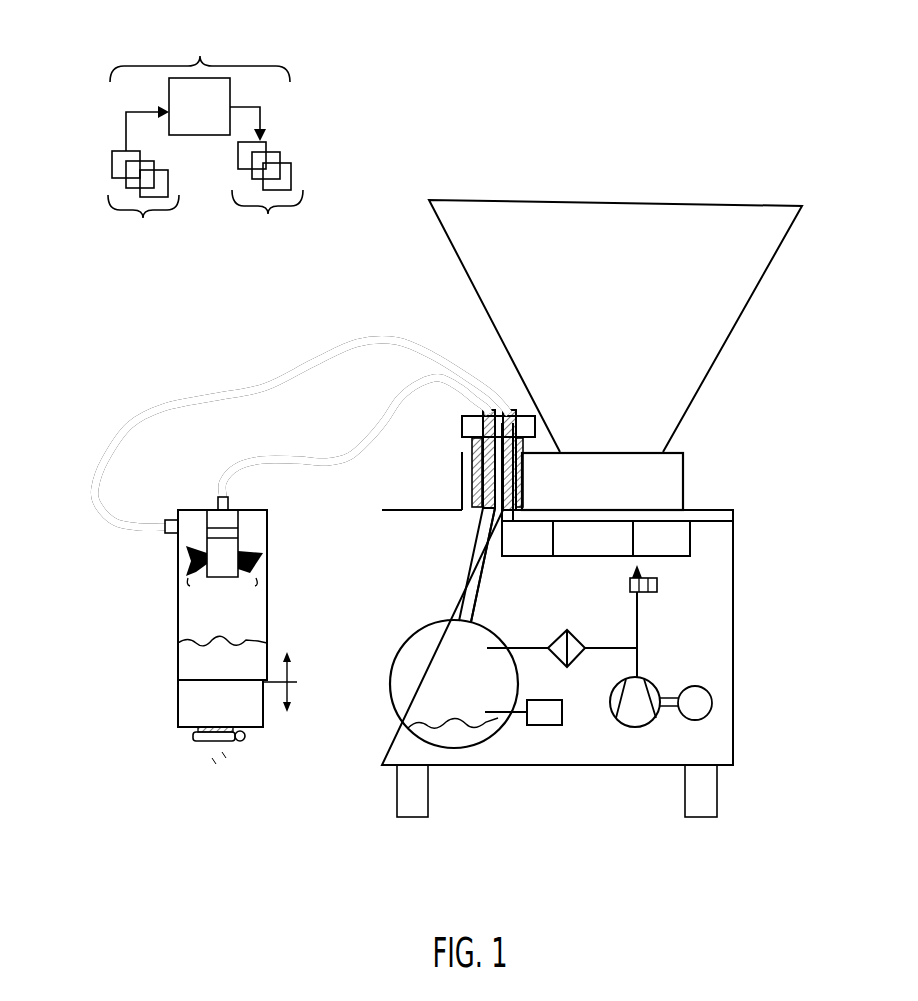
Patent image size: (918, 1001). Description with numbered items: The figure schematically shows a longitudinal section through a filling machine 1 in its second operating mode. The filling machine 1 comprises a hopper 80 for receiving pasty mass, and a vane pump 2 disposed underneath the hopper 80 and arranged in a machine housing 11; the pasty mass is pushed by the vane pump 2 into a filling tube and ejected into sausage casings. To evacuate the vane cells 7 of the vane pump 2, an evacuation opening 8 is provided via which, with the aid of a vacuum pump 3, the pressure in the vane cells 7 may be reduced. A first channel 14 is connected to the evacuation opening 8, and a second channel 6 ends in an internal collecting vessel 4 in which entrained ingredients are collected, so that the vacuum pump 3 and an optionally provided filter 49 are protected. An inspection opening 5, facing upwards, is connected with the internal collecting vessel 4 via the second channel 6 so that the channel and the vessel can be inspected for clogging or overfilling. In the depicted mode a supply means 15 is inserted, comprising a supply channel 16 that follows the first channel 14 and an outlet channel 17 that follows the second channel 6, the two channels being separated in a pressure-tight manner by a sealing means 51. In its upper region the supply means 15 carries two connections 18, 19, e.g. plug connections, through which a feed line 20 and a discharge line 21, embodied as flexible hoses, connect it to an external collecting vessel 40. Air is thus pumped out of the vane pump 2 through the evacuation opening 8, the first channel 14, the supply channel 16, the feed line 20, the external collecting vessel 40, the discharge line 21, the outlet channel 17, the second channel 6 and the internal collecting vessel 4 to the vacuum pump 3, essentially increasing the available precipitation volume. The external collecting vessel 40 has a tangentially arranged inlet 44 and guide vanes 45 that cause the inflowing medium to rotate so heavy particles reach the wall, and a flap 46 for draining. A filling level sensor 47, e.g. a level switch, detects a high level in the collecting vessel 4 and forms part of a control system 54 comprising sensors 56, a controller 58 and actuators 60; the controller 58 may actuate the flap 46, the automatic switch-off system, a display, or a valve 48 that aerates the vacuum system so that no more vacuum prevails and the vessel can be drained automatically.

The filling machine 1 is at (611, 168).
The vane pump 2 is at (684, 526).
The vacuum pump 3 is at (636, 728).
The collecting vessel 4 is at (391, 702).
The inspection opening 5 is at (461, 431).
The second channel 6 is at (461, 508).
The vane cells 7 is at (540, 557).
The evacuation opening 8 is at (507, 543).
The machine housing 11 is at (734, 620).
The first channel 14 is at (524, 507).
The supply means 15 is at (534, 405).
The supply channel 16 is at (524, 462).
The outlet channel 17 is at (471, 464).
The connection 18 is at (516, 404).
The connection 19 is at (481, 414).
The feed line 20 is at (350, 341).
The discharge line 21 is at (330, 467).
The external collecting vessel 40 is at (214, 654).
The tangentially arranged inlet 44 is at (164, 536).
The guide vanes 45 is at (176, 572).
The flap 46 is at (240, 745).
The filling level sensor 47 is at (543, 727).
The valve 48 is at (658, 586).
The filter 49 is at (569, 632).
The sealing means 51 is at (496, 545).
The control system 54 is at (206, 136).
The sensors 56 is at (143, 184).
The controller 58 is at (199, 106).
The actuators 60 is at (267, 184).
The hopper 80 is at (733, 332).